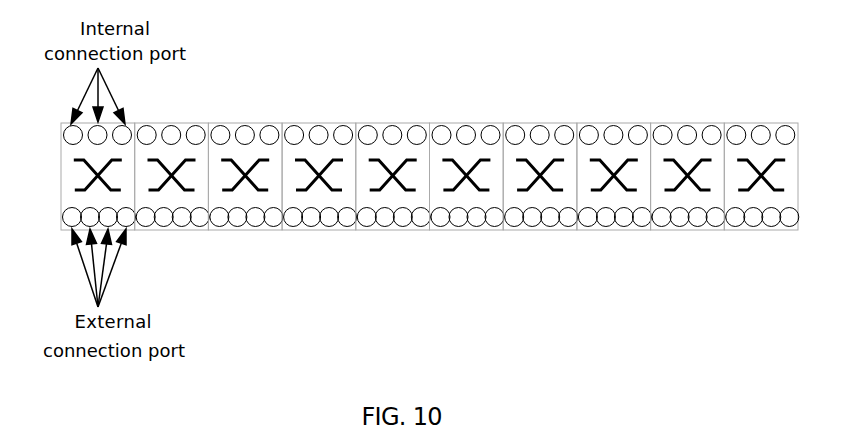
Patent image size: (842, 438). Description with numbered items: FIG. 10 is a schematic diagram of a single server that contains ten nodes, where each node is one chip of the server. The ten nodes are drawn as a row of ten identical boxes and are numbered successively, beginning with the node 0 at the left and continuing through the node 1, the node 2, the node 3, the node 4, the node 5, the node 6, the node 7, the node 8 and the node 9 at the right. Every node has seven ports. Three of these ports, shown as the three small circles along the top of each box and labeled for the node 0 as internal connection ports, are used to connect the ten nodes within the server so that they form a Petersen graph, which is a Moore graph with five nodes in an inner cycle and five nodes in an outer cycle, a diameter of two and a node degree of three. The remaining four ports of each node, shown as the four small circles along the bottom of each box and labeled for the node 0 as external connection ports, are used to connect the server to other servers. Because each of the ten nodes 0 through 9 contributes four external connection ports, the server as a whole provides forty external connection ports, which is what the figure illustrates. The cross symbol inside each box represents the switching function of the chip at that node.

The node 0 is at (98, 195).
The node 1 is at (172, 195).
The node 2 is at (245, 195).
The node 3 is at (319, 195).
The node 4 is at (393, 195).
The node 5 is at (467, 195).
The node 6 is at (540, 195).
The node 7 is at (614, 195).
The node 8 is at (688, 195).
The node 9 is at (761, 195).